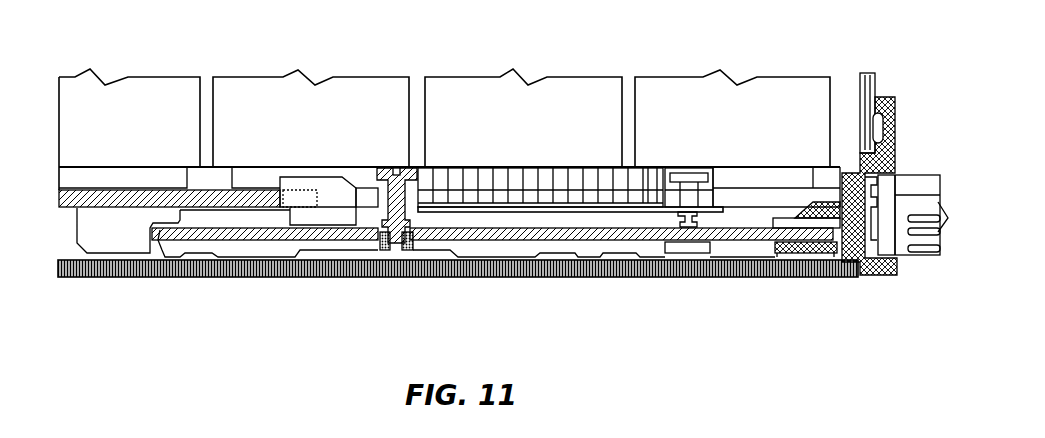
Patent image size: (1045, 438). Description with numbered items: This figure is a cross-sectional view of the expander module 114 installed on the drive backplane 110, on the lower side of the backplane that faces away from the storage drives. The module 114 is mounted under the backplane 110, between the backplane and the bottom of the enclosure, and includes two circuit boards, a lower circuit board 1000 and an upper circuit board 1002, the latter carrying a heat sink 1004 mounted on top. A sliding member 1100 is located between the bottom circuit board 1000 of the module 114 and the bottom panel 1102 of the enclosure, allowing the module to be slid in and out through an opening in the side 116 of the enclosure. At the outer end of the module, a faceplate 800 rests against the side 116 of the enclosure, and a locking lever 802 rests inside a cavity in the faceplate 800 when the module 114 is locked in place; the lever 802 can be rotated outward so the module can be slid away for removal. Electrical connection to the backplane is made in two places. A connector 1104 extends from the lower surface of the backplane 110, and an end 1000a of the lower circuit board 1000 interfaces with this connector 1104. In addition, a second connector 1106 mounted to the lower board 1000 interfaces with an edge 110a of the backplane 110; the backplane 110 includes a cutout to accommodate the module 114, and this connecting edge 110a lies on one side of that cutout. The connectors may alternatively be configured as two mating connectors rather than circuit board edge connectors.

The backplane 110 is at (59, 193).
The edge of the backplane 110a is at (313, 190).
The heat sink 1004 is at (538, 178).
The side of the enclosure 116 is at (877, 88).
The connector 1104 is at (108, 243).
The end of the lower circuit board 1000a is at (182, 258).
The sliding member 1100 is at (246, 258).
The second connector 1106 is at (336, 207).
The circuit board 1000 is at (482, 242).
The expander module 114 is at (593, 292).
The circuit board 1002 is at (742, 197).
The bottom panel 1102 is at (776, 255).
The faceplate 800 is at (877, 273).
The locking lever 802 is at (922, 257).